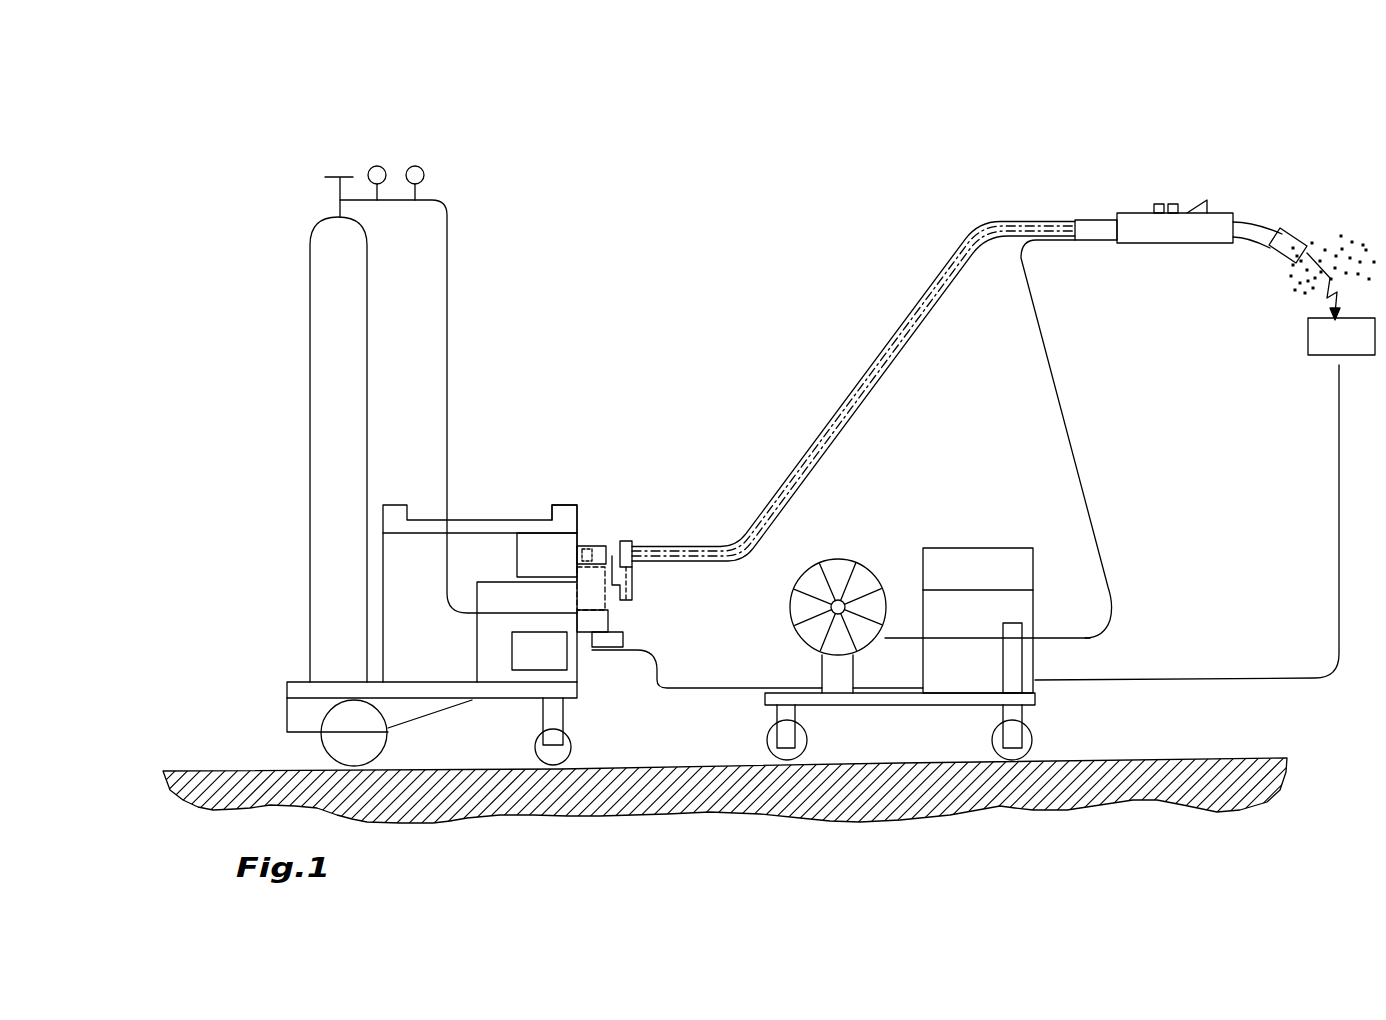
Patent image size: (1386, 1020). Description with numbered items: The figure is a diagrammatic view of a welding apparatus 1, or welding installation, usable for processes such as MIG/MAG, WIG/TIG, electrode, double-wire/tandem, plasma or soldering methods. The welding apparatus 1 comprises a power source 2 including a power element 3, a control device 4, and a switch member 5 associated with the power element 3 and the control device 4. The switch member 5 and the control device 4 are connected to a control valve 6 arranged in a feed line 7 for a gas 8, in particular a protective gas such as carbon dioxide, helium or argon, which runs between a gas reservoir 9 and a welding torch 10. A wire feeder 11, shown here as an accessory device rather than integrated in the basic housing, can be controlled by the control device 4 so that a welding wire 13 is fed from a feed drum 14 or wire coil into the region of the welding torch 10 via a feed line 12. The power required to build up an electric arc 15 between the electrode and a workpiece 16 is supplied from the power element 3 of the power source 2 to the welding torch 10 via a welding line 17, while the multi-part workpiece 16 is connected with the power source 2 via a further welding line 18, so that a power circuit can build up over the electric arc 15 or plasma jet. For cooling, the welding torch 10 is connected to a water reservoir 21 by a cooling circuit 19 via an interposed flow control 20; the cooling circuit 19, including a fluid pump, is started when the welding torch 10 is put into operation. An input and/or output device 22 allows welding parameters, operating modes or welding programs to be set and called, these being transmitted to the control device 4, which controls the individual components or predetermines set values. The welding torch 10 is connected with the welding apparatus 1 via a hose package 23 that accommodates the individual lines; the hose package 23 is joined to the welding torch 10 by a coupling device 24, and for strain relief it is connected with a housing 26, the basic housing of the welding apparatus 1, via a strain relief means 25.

The welding apparatus 1 is at (232, 158).
The power source 2 is at (535, 378).
The power element 3 is at (533, 657).
The control device 4 is at (468, 645).
The switch member 5 is at (597, 695).
The control valve 6 is at (590, 626).
The feed line 7 is at (1002, 237).
The gas 8 is at (1313, 212).
The gas reservoir 9 is at (338, 296).
The welding torch 10 is at (1228, 182).
The wire feeder 11 is at (1090, 727).
The feed line 12 is at (1086, 472).
The welding wire 13 is at (952, 643).
The feed drum 14 is at (847, 575).
The electric arc 15 is at (1303, 306).
The workpiece 16 is at (1352, 338).
The welding line 17 is at (928, 288).
The further welding line 18 is at (1348, 542).
The cooling circuit 19 is at (853, 392).
The flow control 20 is at (586, 548).
The water reservoir 21 is at (538, 546).
The input and/or output device 22 is at (568, 520).
The hose package 23 is at (688, 545).
The coupling device 24 is at (1097, 230).
The strain relief means 25 is at (626, 548).
The housing 26 is at (627, 578).